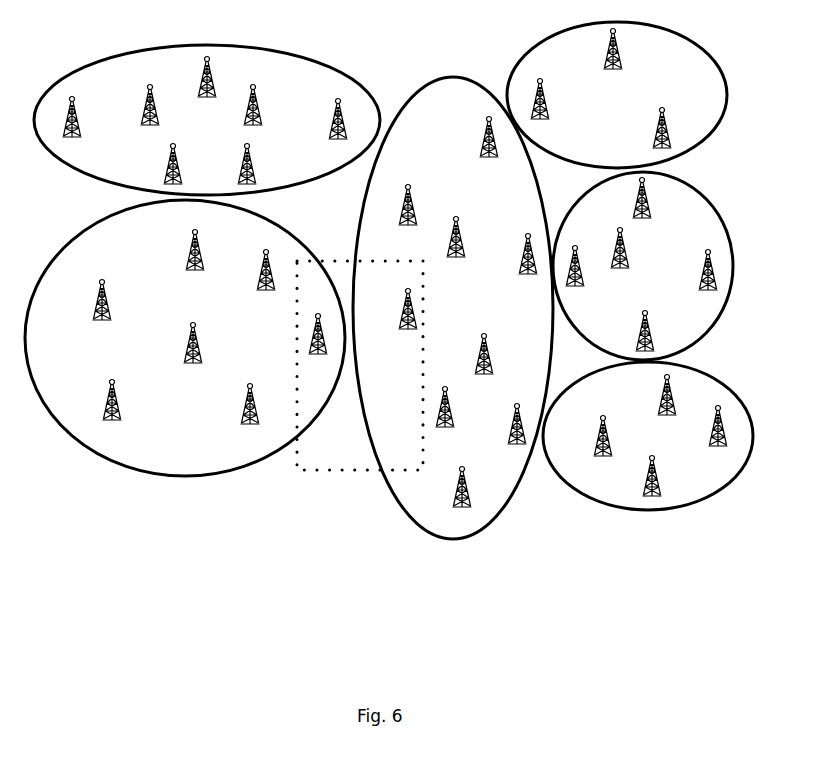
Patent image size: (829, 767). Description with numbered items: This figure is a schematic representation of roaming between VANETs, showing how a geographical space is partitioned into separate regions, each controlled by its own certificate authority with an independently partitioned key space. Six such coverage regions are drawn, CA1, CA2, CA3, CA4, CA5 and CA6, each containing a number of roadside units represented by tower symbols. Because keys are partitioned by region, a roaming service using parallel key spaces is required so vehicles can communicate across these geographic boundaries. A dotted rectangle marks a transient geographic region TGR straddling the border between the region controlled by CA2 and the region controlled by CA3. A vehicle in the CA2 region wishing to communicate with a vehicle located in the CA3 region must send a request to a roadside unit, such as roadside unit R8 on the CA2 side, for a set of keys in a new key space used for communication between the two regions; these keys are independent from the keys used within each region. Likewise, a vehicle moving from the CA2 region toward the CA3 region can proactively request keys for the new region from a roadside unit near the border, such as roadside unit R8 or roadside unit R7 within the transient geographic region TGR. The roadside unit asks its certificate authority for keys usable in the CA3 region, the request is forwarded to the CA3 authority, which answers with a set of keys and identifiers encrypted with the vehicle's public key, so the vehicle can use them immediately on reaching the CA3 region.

The roadside unit R7 is at (411, 305).
The roadside unit R8 is at (335, 338).
The certificate authority region CA1 is at (207, 110).
The certificate authority region CA2 is at (184, 338).
The certificate authority region CA3 is at (453, 300).
The certificate authority region CA4 is at (617, 95).
The certificate authority region CA5 is at (647, 266).
The certificate authority region CA6 is at (648, 433).
The transient geographic region TGR is at (330, 452).